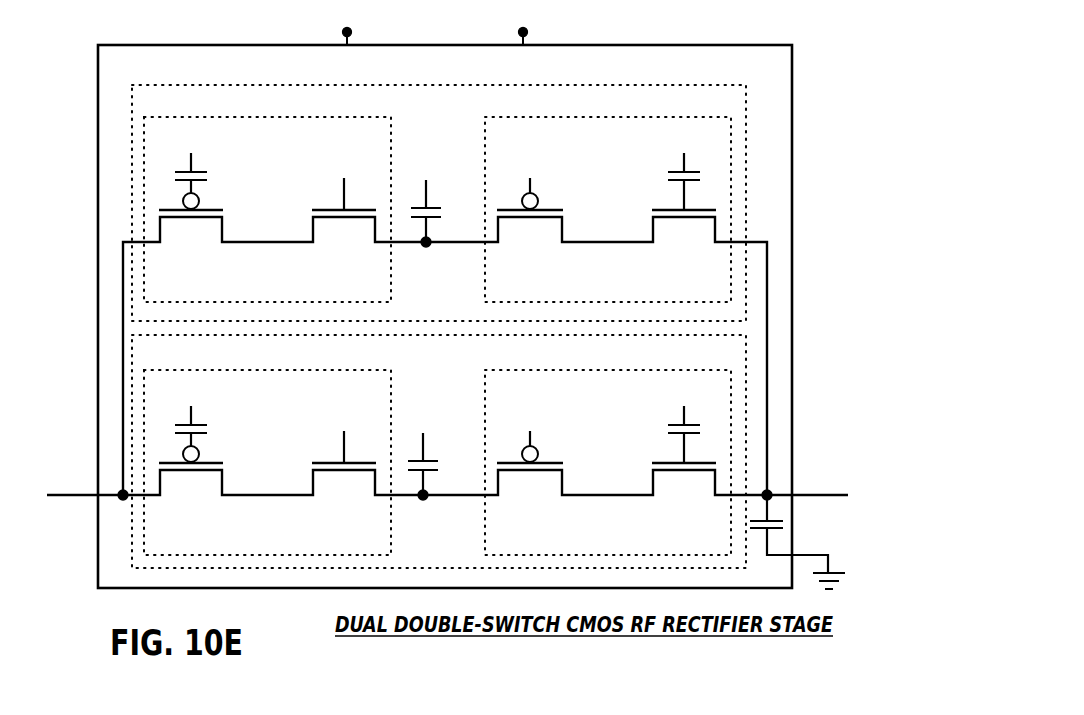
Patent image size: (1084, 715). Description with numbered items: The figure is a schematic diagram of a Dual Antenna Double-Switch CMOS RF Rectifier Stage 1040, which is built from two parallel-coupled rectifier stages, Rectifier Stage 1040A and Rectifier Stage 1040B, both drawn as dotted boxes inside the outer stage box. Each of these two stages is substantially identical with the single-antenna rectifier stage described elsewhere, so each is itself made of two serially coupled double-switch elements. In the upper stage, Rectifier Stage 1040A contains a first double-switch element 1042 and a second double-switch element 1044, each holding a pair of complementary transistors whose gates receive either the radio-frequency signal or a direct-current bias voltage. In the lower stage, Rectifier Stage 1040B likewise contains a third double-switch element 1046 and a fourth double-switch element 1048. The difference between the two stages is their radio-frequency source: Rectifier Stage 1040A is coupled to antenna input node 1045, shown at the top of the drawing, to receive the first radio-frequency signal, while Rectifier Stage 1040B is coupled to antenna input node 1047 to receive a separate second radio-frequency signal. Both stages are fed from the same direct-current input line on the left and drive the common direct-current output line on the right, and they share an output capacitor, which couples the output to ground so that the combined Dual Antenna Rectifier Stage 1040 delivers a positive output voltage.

The Dual Antenna Double-Switch CMOS RF Rectifier Stage 1040 is at (181, 73).
The Rectifier Stage 1040A is at (191, 113).
The Rectifier Stage 1040B is at (191, 363).
The double-switch element 1 1042 is at (286, 150).
The double-switch element 2 1044 is at (611, 150).
The double-switch element 3 1046 is at (286, 403).
The double-switch element 4 1048 is at (611, 403).
The antenna input node 1045 is at (350, 33).
The antenna input node 1047 is at (526, 33).